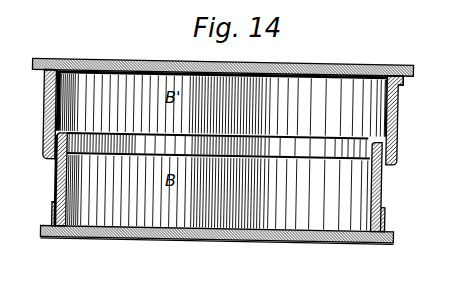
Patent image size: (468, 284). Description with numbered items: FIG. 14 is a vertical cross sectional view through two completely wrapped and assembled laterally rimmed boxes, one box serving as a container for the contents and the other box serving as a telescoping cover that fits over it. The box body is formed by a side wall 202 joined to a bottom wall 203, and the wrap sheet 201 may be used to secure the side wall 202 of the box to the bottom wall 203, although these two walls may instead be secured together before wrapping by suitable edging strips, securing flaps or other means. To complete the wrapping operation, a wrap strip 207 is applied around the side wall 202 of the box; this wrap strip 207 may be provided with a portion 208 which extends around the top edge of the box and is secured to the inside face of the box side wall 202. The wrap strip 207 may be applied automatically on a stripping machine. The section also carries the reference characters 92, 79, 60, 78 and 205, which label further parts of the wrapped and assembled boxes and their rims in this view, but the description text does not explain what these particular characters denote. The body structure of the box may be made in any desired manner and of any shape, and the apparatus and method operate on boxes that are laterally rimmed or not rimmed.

The top flange 92 is at (207, 84).
The upper side wall 79 is at (1, 192).
The left upper wall 60 is at (4, 143).
The inner liner 78 is at (0, 158).
The side wall 202 is at (60, 169).
The wrap strip 207 is at (58, 188).
The lip 205 is at (52, 222).
The portion 208 is at (338, 148).
The wrap sheet 201 is at (105, 238).
The bottom wall 203 is at (165, 233).